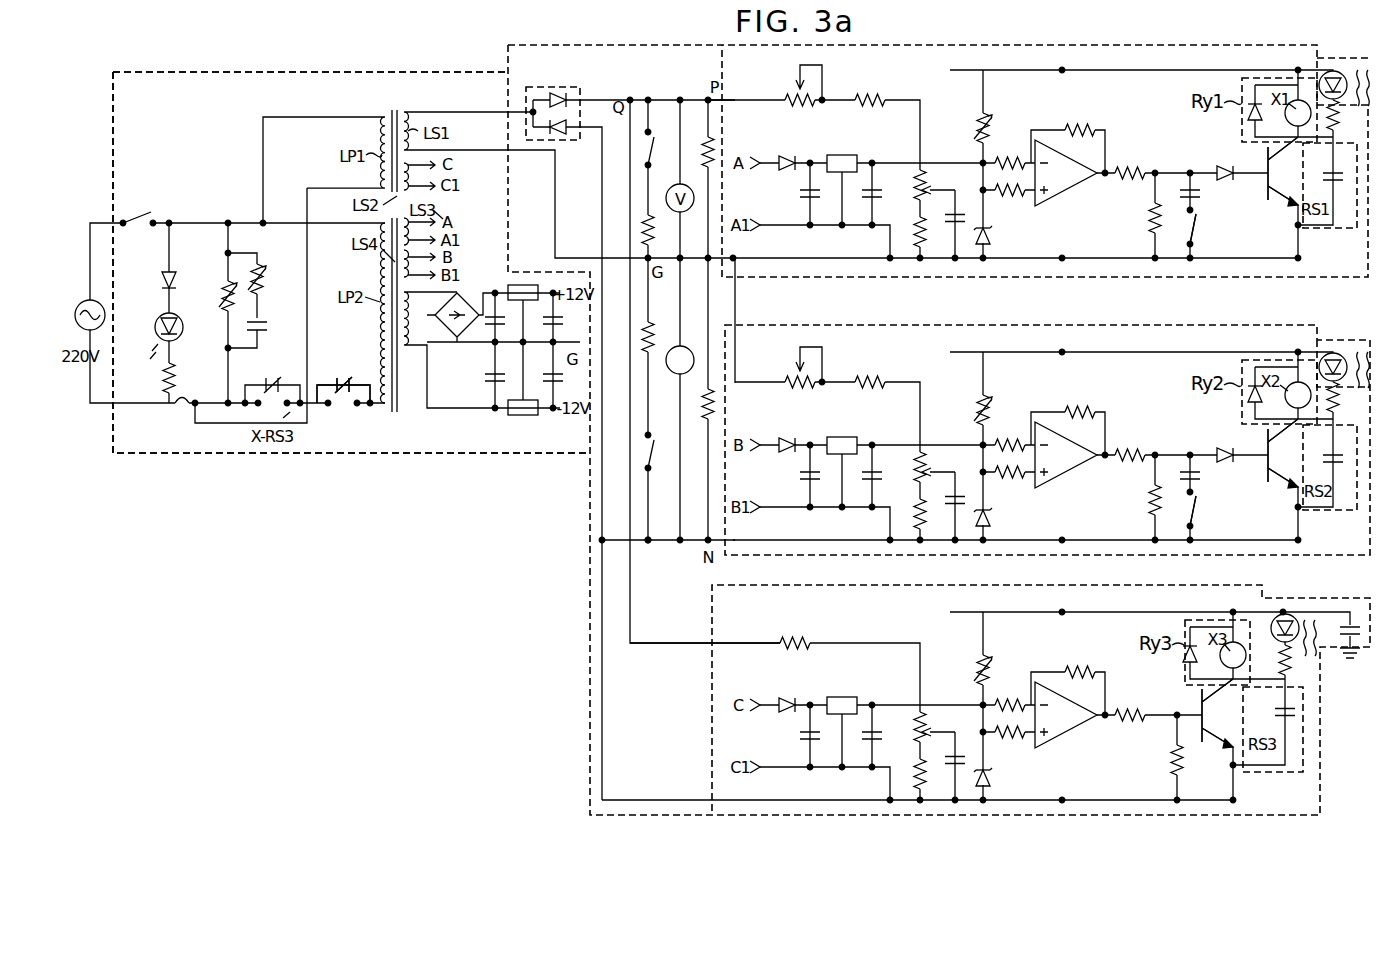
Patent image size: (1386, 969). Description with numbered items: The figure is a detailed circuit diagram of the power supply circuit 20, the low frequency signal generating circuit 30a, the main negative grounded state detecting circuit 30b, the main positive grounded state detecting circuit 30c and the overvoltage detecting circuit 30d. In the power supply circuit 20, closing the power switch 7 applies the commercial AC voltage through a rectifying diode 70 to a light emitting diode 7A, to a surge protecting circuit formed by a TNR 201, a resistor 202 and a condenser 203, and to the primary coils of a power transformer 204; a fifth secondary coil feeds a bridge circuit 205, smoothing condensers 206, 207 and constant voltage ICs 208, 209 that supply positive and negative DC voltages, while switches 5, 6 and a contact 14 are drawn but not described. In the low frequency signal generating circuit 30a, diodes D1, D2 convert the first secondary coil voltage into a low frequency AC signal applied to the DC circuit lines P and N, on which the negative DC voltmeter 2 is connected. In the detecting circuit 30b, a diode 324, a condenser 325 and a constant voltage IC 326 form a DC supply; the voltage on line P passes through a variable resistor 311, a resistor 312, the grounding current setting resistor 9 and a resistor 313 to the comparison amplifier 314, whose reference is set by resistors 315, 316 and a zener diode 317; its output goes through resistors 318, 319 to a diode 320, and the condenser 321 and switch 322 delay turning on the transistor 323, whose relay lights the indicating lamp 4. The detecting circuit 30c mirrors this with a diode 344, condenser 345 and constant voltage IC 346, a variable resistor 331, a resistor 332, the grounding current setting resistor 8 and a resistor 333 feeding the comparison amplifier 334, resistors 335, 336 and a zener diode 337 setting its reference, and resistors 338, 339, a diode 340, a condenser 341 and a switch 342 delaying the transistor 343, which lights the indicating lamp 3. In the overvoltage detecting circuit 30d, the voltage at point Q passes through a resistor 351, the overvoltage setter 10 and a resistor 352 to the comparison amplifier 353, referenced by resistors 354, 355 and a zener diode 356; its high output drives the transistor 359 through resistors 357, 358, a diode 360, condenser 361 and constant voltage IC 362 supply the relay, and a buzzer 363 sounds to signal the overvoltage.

The power supply circuit 20 is at (258, 70).
The power switch 7 is at (136, 217).
The rectifying diode 70 is at (164, 281).
The light emitting diode 7A is at (164, 315).
The TNR 201 is at (224, 280).
The resistor 202 is at (266, 276).
The condenser 203 is at (264, 336).
The power transformer 204 is at (396, 112).
The bridge circuit 205 is at (497, 333).
The smoothing condenser 206 is at (491, 350).
The smoothing condenser 207 is at (483, 380).
The constant voltage IC 208 is at (518, 272).
The constant voltage IC 209 is at (522, 415).
The relay contact 14 is at (333, 412).
The diode D1 is at (563, 92).
The diode D2 is at (562, 140).
The (−) DC voltmeter 2 is at (676, 344).
The switch 5 is at (656, 141).
The switch 6 is at (652, 436).
The main (−) grounding current setting resistor 9 is at (918, 188).
The main (+) grounding current setting resistor 8 is at (926, 489).
The overvoltage setter 10 is at (924, 749).
The main (+) grounded state indicating lamp 3 is at (1345, 378).
The main (−) grounded state indicating lamp 4 is at (1338, 74).
The low frequency signal generating circuit 30a is at (546, 41).
The main (−) grounded state detecting circuit 30b is at (836, 278).
The main (+) grounded state detecting circuit 30c is at (1043, 323).
The overvoltage detecting circuit 30d is at (710, 690).
The variable resistor 311 is at (795, 97).
The resistor 312 is at (877, 97).
The resistor 313 is at (992, 188).
The comparison amplifier 314 is at (1080, 183).
The resistor 315 is at (986, 118).
The resistor 316 is at (1010, 155).
The zener diode 317 is at (990, 236).
The resistor 318 is at (1127, 166).
The resistor 319 is at (1149, 228).
The diode 320 is at (1229, 180).
The condenser 321 is at (1192, 170).
The switch 322 is at (1196, 232).
The transistor 323 is at (1282, 174).
The diode 324 is at (787, 154).
The condenser 325 is at (799, 194).
The constant voltage IC 326 is at (846, 154).
The variable resistor 331 is at (787, 366).
The resistor 332 is at (885, 366).
The resistor 333 is at (1017, 486).
The comparison amplifier 334 is at (1078, 450).
The resistor 335 is at (998, 393).
The resistor 336 is at (1013, 427).
The zener diode 337 is at (1008, 522).
The resistor 338 is at (1140, 438).
The resistor 339 is at (1135, 508).
The diode 340 is at (1219, 437).
The condenser 341 is at (1212, 484).
The switch 342 is at (1218, 513).
The transistor 343 is at (1292, 453).
The diode 344 is at (783, 426).
The condenser 345 is at (789, 478).
The constant voltage IC 346 is at (851, 427).
The resistor 351 is at (800, 625).
The resistor 352 is at (1020, 746).
The comparison amplifier 353 is at (1076, 711).
The resistor 354 is at (1002, 658).
The resistor 355 is at (1012, 687).
The zener diode 356 is at (1009, 780).
The resistor 357 is at (1143, 696).
The resistor 358 is at (1155, 768).
The transistor 359 is at (1228, 713).
The diode 360 is at (786, 690).
The condenser 361 is at (791, 744).
The constant voltage IC 362 is at (851, 691).
The buzzer 363 is at (1363, 619).